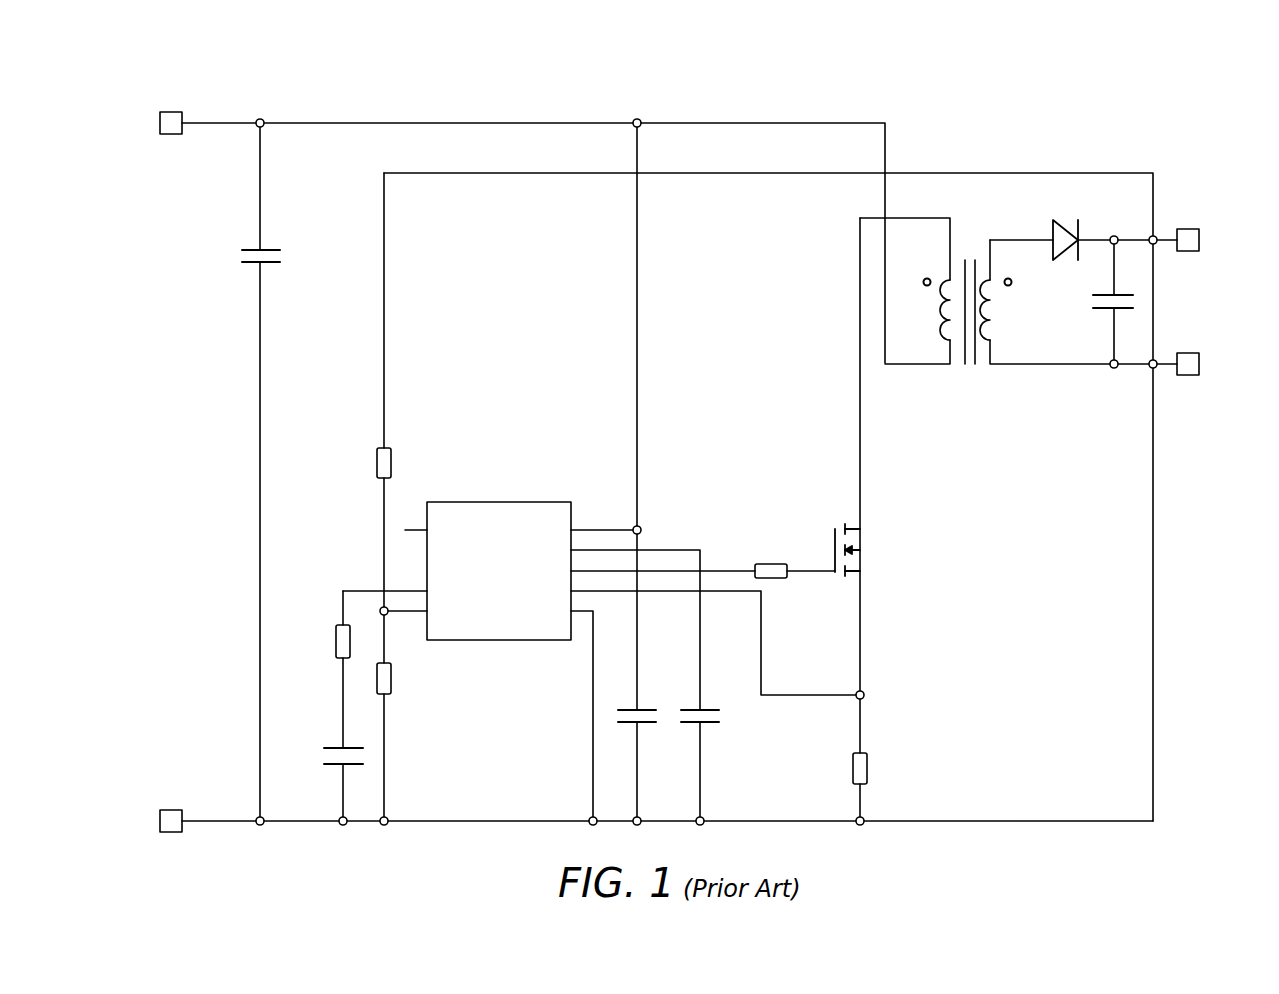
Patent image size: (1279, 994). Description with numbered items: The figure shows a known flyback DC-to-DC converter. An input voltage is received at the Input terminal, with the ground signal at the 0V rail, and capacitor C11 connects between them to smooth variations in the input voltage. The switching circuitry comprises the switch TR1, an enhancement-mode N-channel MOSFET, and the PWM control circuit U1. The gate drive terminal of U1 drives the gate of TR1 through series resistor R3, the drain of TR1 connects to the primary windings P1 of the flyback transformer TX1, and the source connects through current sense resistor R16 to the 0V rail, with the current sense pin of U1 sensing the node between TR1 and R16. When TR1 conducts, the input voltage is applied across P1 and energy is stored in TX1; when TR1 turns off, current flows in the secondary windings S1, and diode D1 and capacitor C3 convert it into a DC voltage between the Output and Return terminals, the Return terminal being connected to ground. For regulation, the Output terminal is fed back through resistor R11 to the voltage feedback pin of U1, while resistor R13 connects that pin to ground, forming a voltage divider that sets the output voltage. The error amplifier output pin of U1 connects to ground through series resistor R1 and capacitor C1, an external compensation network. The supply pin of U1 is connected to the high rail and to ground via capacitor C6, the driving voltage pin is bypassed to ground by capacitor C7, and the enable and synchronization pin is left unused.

The Input terminal Input is at (144, 123).
The 0 V input 0V is at (155, 821).
The OUTPUT terminal Output is at (1227, 241).
The RETURN terminal Return is at (1225, 365).
The capacitor C11 is at (285, 256).
The resistor R11 is at (406, 463).
The resistor R13 is at (406, 678).
The resistor R1 is at (326, 641).
The capacitor C1 is at (328, 755).
The capacitor C6 is at (645, 702).
The capacitor C7 is at (707, 702).
The resistor R3 is at (771, 558).
The current sense resistor R16 is at (837, 768).
The control circuit U1 is at (499, 558).
The switch TR1 is at (838, 563).
The transformer TX1 is at (980, 311).
The primary transformer coil P1 is at (927, 310).
The secondary windings S1 is at (1002, 310).
The diode D1 is at (1066, 226).
The capacitor C3 is at (1130, 299).